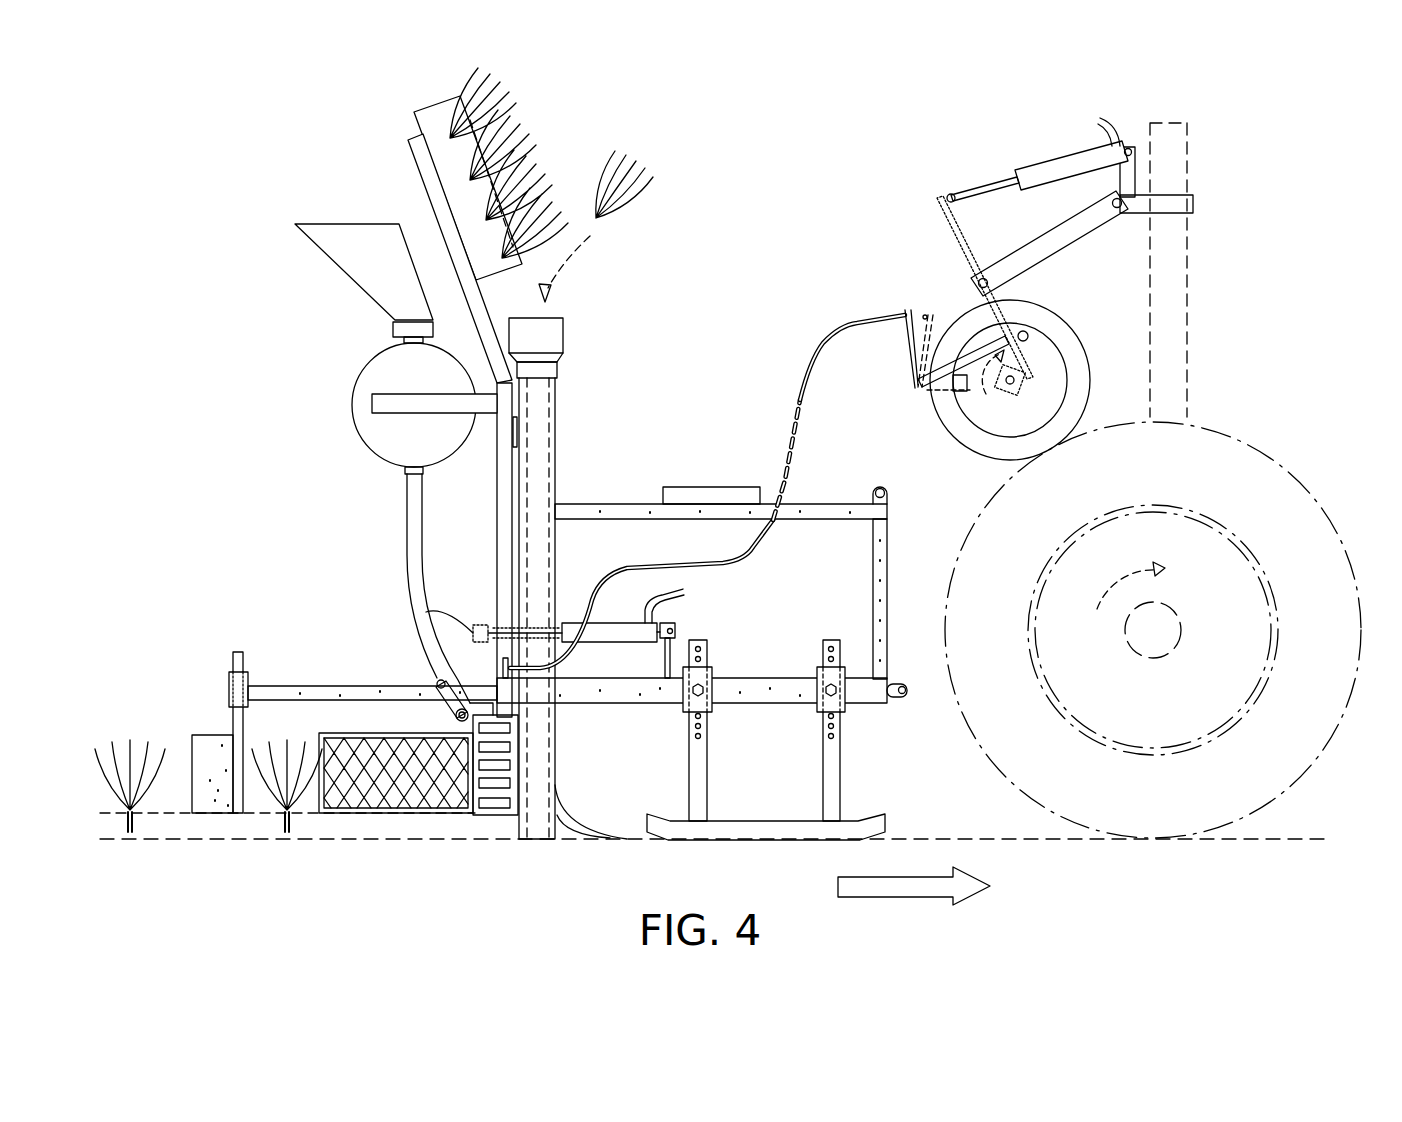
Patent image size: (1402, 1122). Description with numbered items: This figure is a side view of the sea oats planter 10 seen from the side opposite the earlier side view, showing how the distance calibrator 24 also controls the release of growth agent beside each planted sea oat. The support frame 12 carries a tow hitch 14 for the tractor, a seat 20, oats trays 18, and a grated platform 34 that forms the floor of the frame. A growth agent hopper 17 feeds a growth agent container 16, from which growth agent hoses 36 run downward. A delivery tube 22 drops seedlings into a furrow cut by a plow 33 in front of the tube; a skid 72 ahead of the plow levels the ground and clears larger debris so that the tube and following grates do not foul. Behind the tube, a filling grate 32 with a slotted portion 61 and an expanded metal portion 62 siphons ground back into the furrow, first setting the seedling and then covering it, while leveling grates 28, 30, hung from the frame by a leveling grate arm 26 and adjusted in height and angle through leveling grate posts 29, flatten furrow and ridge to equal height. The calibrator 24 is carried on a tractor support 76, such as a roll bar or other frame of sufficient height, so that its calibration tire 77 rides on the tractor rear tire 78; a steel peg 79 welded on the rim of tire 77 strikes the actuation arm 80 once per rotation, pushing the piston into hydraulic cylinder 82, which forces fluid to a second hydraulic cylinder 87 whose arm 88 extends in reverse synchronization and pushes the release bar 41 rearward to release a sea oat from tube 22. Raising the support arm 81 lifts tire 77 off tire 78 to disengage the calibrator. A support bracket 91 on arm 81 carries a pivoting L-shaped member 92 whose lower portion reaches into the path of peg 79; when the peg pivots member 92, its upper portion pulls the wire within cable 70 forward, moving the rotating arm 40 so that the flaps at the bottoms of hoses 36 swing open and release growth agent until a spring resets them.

The sea oats planter 10 is at (758, 152).
The support frame 12 is at (878, 712).
The tow hitch 14 is at (880, 554).
The growth agent container 16 is at (372, 370).
The growth agent hopper 17 is at (305, 212).
The oats tray 18 is at (398, 150).
The seat 20 is at (711, 487).
The delivery tube 22 is at (545, 383).
The distance calibrator 24 is at (996, 370).
The leveling grate arm 26 is at (229, 684).
The leveling grate 28 is at (182, 740).
The leveling grate post 29 is at (243, 660).
The leveling grate 30 is at (208, 786).
The filling grate 32 is at (389, 761).
The plow 33 is at (585, 836).
The grated platform 34 is at (758, 678).
The growth agent hose 36 is at (408, 522).
The rotating arm 40 is at (440, 700).
The release bar 41 is at (440, 617).
The slotted portion 61 is at (490, 803).
The expanded metal portion 62 is at (400, 800).
The cable 70 is at (835, 347).
The skid 72 is at (775, 825).
The post 76 is at (1183, 284).
The calibration tire 77 is at (1030, 312).
The tractor rear tire 78 is at (1262, 468).
The peg 79 is at (1029, 338).
The actuation arm 80 is at (965, 246).
The support arm 81 is at (1070, 235).
The hydraulic cylinder 82 is at (1062, 165).
The hydraulic cylinder 87 is at (623, 634).
The arm 88 is at (523, 622).
The support bracket 91 is at (903, 350).
The L-shaped member 92 is at (905, 325).